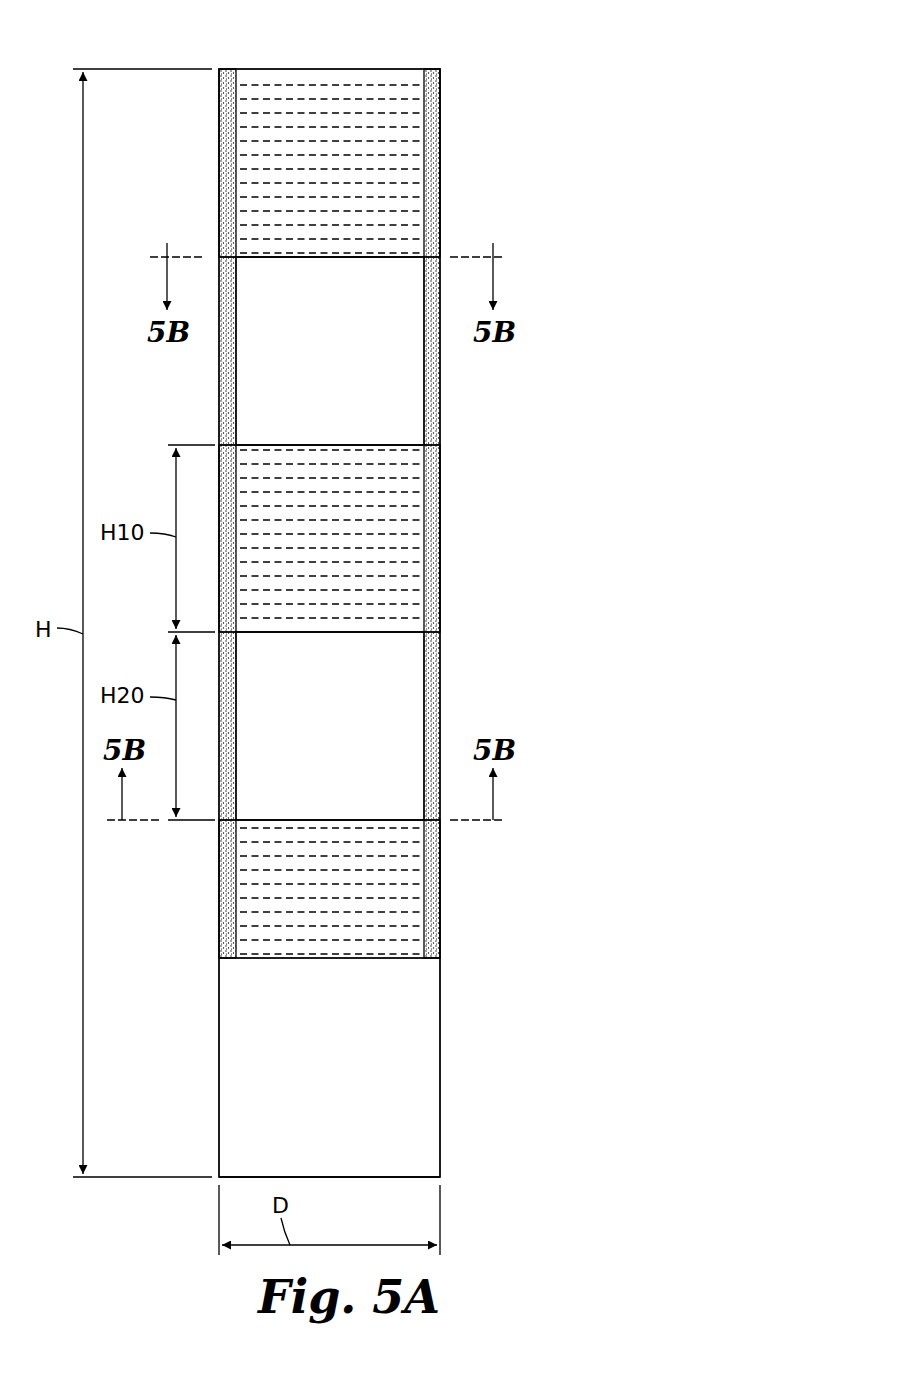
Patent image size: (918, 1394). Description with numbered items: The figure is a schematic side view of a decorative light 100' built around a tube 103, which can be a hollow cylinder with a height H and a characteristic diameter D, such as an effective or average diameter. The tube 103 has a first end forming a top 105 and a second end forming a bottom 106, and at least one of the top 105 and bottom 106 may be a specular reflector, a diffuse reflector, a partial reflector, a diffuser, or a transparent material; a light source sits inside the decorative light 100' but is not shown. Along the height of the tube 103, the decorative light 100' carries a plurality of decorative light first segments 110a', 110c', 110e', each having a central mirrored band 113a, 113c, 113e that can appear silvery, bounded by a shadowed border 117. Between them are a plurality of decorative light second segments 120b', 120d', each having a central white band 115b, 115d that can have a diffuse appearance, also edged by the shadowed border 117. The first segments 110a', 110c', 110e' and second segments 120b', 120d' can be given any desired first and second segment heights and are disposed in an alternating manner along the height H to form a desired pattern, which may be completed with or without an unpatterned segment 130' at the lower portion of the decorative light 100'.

The decorative light 100' is at (389, 621).
The tube 103 is at (206, 903).
The top 105 is at (243, 68).
The bottom 106 is at (356, 1178).
The decorative light first segment 110a' is at (379, 163).
The decorative light first segment 110c' is at (375, 538).
The decorative light first segment 110e' is at (378, 889).
The central mirrored band 113a is at (382, 70).
The central mirrored band 113c is at (402, 500).
The central mirrored band 113e is at (407, 935).
The central white band 115b is at (410, 385).
The central white band 115d is at (405, 670).
The shadowed border 117 is at (437, 187).
The decorative light second segment 120b' is at (376, 351).
The decorative light second segment 120d' is at (376, 726).
The unpatterned segment 130' is at (371, 1067).